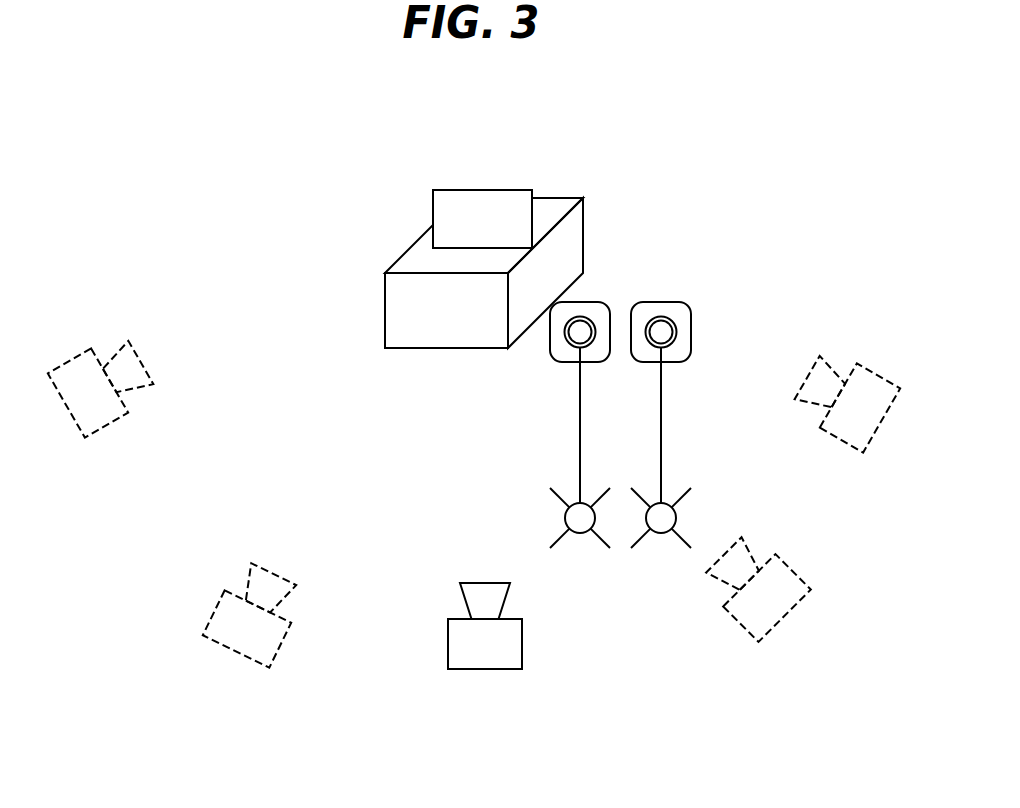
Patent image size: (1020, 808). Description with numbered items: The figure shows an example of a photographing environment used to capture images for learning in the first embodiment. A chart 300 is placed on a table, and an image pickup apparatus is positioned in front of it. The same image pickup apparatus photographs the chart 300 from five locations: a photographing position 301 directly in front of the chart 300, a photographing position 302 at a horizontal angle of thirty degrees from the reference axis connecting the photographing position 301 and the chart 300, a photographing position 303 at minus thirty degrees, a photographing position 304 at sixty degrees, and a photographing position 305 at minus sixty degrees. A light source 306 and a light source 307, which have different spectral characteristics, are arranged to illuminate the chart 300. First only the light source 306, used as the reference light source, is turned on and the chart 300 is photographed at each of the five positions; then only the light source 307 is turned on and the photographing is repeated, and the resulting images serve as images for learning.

The chart 300 is at (492, 185).
The photographing position 301 is at (487, 670).
The photographing position 302 is at (232, 650).
The photographing position 303 is at (792, 608).
The photographing position 304 is at (70, 415).
The photographing position 305 is at (880, 430).
The light source 306 is at (594, 302).
The light source 307 is at (675, 302).